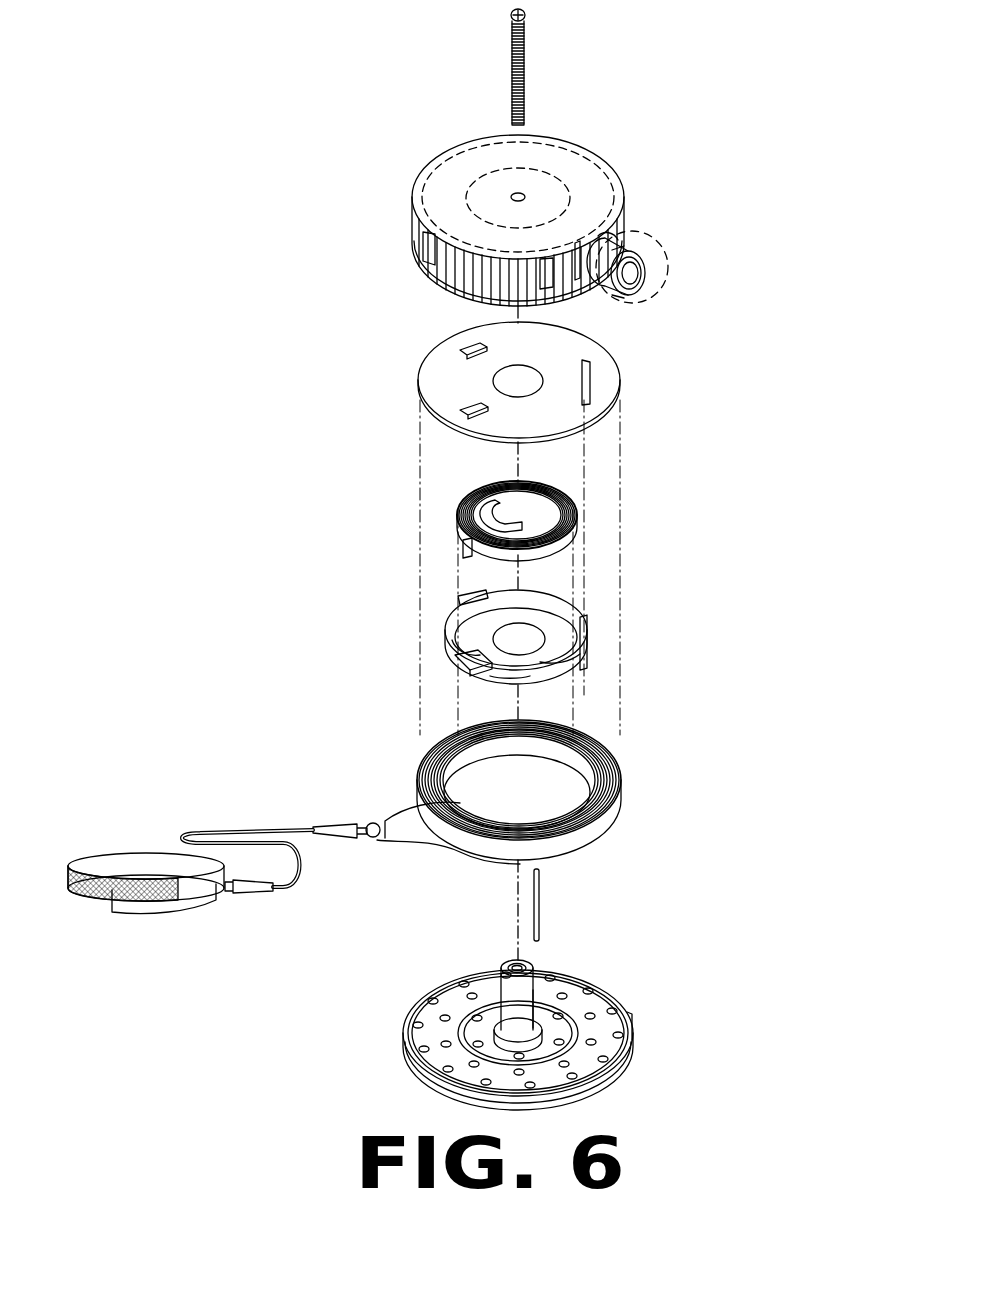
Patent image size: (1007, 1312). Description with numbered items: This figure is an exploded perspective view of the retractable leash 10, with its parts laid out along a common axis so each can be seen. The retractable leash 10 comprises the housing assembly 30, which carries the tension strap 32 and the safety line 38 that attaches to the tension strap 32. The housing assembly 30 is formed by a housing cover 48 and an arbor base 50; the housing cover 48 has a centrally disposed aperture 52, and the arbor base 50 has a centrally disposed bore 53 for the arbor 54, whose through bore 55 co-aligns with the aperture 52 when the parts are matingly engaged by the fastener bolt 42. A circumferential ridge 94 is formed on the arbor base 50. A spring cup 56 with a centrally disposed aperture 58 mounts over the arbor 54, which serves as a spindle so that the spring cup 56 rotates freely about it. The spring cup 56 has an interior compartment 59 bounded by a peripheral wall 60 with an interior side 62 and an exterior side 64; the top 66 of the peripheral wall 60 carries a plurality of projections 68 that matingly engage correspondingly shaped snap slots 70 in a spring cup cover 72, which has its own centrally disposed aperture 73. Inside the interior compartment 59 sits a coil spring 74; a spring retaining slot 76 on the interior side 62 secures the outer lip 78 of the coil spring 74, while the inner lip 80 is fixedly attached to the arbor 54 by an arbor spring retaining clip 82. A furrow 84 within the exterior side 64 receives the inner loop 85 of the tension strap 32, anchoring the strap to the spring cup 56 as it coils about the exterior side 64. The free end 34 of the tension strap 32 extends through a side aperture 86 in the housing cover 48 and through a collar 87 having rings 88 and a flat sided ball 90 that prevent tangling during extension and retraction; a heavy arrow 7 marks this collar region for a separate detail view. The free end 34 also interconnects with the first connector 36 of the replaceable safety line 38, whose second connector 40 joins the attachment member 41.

The detail view indicator 7 is at (677, 194).
The retractable leash 10 is at (778, 95).
The housing assembly 30 is at (496, 182).
The tension strap 32 is at (516, 823).
The free end of tension strap 34 is at (364, 878).
The first connector on safety line 36 is at (328, 795).
The safety line 38 is at (247, 820).
The second connector on safety line 40 is at (242, 927).
The attachment member 41 is at (146, 836).
The fastener bolt 42 is at (468, 64).
The housing cover 48 is at (524, 158).
The arbor base 50 is at (516, 989).
The aperture in housing cover 52 is at (508, 143).
The bore in arbor base 53 is at (552, 966).
The arbor 54 is at (608, 986).
The through bore in arbor 55 is at (499, 927).
The spring cup 56 is at (518, 661).
The aperture in spring cup 58 is at (588, 604).
The interior compartment of spring cup 59 is at (569, 632).
The peripheral wall of spring cup 60 is at (422, 675).
The interior side of peripheral wall 62 is at (420, 579).
The exterior side of peripheral wall 64 is at (612, 679).
The top of peripheral wall 66 is at (441, 722).
The projection on top 68 is at (422, 698).
The snap slot in spring cup cover 70 is at (419, 370).
The spring cup cover 72 is at (516, 368).
The aperture in spring cup cover 73 is at (476, 345).
The coil spring 74 is at (519, 501).
The spring retaining slot on interior side 76 is at (416, 649).
The outer lip of coil spring 78 is at (412, 511).
The inner lip of coil spring 80 is at (582, 505).
The arbor spring retaining clip 82 is at (612, 905).
The furrow in exterior side 84 is at (632, 642).
The inner loop of tension strap 85 is at (565, 771).
The side aperture in housing cover 86 is at (663, 219).
The collar 87 is at (689, 257).
The ring in collar 88 is at (678, 268).
The flat sided ball in collar 90 is at (661, 279).
The circumferential ridge on arbor base 94 is at (460, 1041).